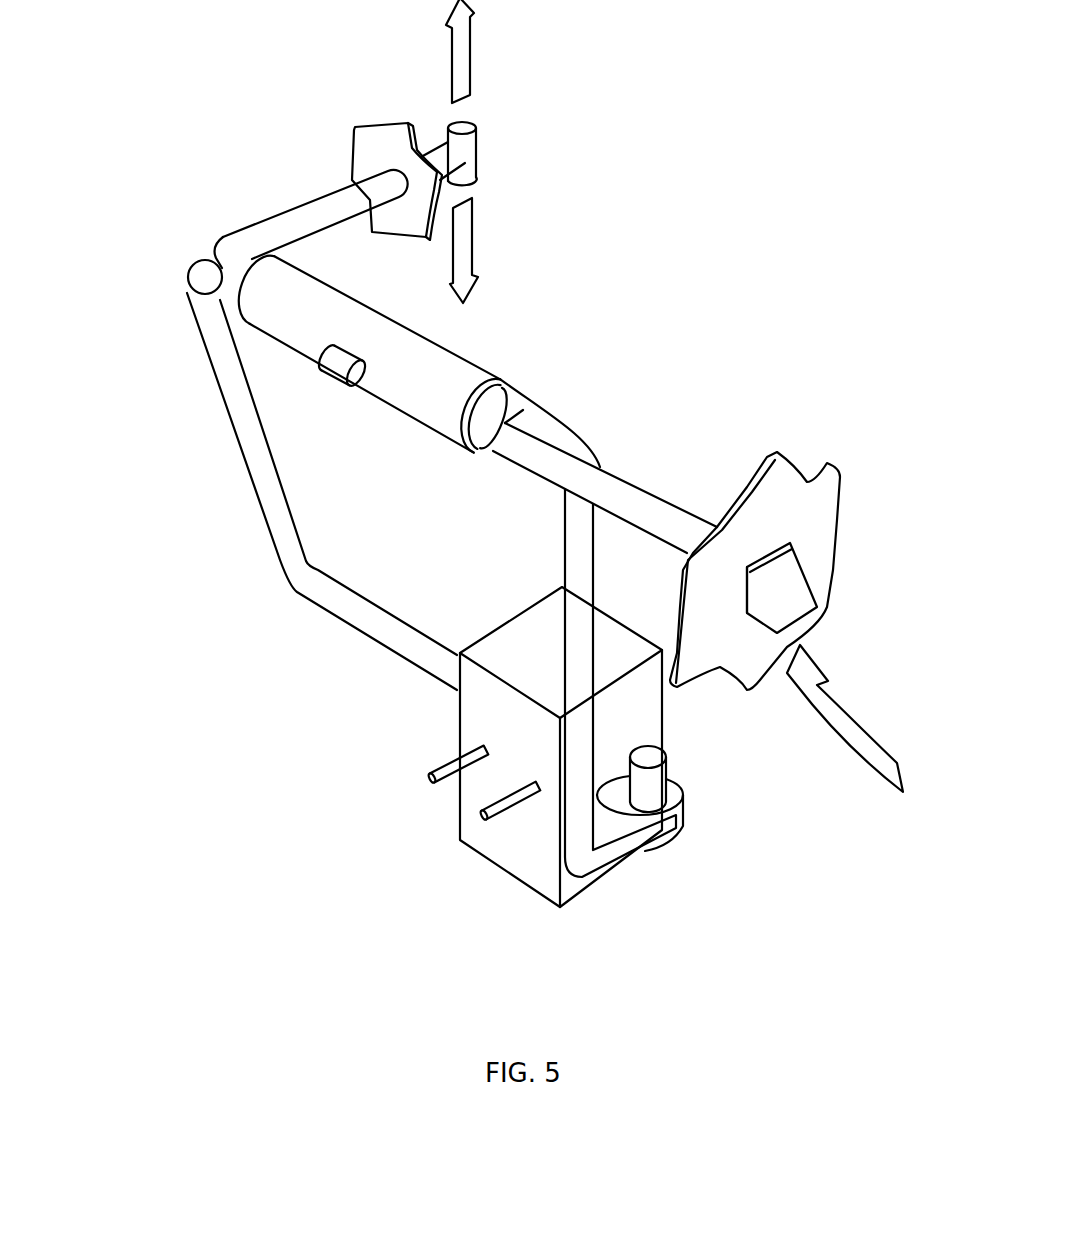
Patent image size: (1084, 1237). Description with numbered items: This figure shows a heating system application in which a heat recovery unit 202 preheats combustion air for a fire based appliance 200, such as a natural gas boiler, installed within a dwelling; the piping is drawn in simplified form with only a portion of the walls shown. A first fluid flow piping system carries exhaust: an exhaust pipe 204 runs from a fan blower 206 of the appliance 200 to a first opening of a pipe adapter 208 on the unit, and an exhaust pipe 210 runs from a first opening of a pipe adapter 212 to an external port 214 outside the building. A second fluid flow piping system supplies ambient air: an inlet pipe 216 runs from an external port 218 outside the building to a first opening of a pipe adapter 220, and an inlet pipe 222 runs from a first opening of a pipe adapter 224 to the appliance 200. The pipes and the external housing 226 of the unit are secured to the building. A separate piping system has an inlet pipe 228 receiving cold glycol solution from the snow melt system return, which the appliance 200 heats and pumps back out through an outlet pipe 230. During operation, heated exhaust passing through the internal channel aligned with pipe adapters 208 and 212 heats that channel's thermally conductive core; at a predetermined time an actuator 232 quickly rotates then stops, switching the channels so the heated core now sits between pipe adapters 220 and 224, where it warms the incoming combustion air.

The fire based appliance 200 is at (473, 722).
The heat recovery unit 202 is at (419, 364).
The exhaust pipe 204 is at (578, 557).
The fan blower 206 is at (696, 817).
The pipe adapter 208 is at (513, 400).
The exhaust pipe 210 is at (310, 218).
The pipe adapter 212 is at (250, 255).
The external port 214 is at (476, 122).
The inlet pipe 216 is at (660, 513).
The external port 218 is at (793, 581).
The pipe adapter 220 is at (480, 436).
The inlet pipe 222 is at (280, 530).
The pipe adapter 224 is at (188, 292).
The external housing 226 is at (370, 323).
The inlet pipe 228 is at (427, 785).
The outlet pipe 230 is at (477, 813).
The actuator 232 is at (330, 373).